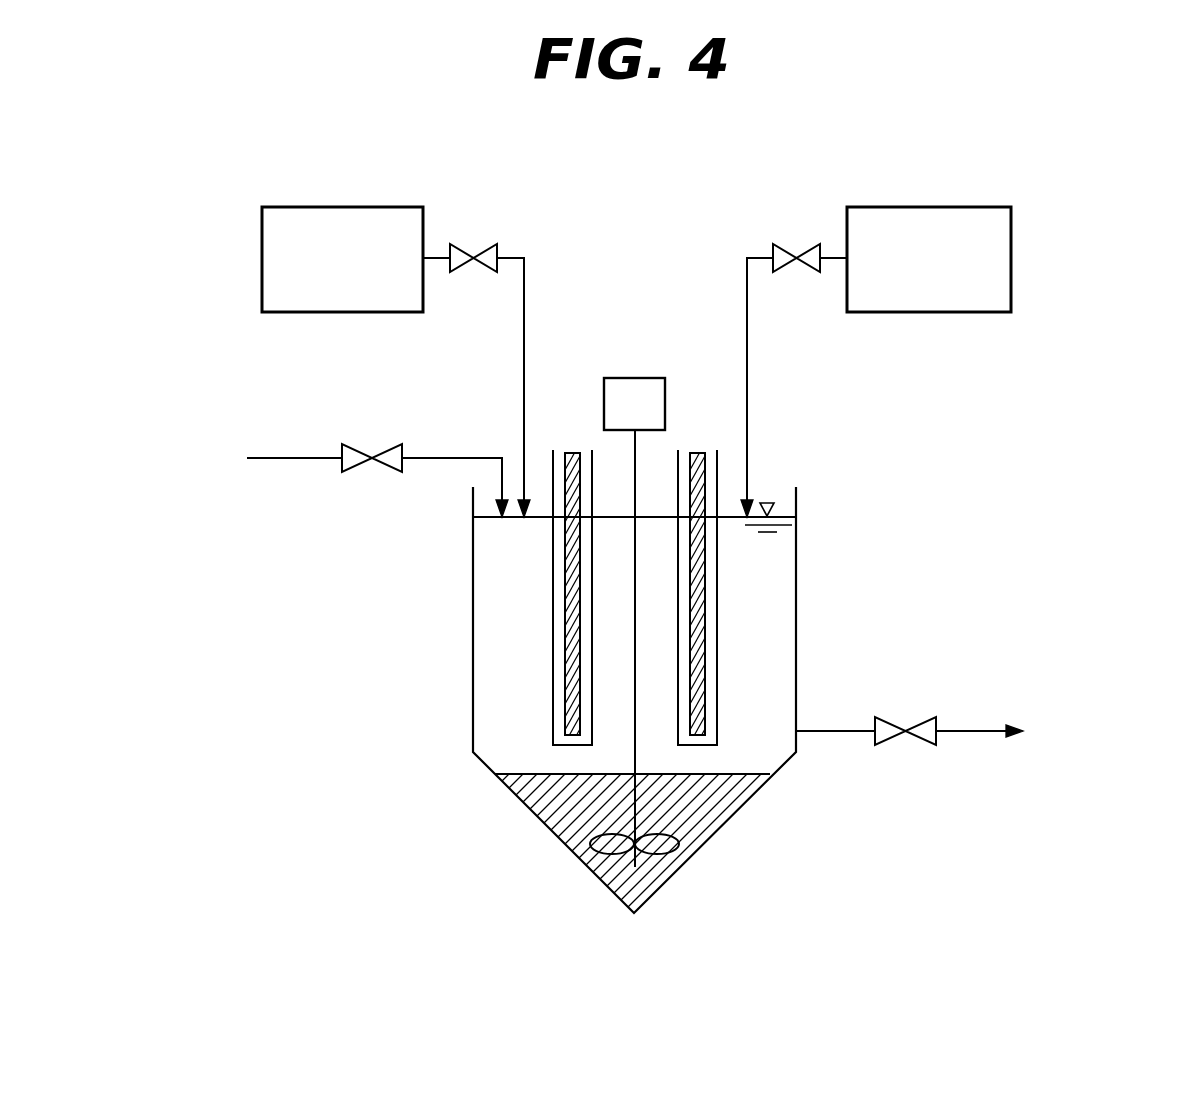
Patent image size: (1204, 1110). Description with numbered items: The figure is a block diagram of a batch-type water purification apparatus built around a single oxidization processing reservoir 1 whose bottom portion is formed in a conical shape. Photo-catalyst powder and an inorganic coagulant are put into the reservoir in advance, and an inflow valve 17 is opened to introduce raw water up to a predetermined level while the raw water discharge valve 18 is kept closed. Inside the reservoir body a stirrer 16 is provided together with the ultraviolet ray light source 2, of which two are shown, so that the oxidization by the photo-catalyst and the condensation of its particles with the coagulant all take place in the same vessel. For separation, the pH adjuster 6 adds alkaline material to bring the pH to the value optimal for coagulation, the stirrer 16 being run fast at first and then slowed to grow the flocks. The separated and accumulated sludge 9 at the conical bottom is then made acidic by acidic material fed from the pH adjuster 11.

The oxidization processing reservoir 1 is at (723, 823).
The ultraviolet ray light source 2 is at (571, 451).
The pH adjuster 6 is at (262, 258).
The sludge 9 is at (563, 815).
The pH adjuster 11 is at (1011, 258).
The stirrer 16 is at (637, 377).
The inflow valve 17 is at (383, 477).
The raw water discharge valve 18 is at (907, 720).